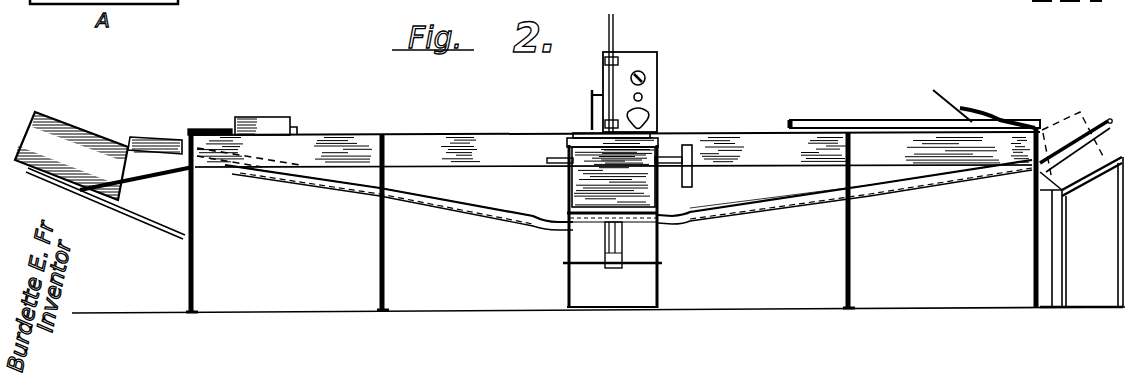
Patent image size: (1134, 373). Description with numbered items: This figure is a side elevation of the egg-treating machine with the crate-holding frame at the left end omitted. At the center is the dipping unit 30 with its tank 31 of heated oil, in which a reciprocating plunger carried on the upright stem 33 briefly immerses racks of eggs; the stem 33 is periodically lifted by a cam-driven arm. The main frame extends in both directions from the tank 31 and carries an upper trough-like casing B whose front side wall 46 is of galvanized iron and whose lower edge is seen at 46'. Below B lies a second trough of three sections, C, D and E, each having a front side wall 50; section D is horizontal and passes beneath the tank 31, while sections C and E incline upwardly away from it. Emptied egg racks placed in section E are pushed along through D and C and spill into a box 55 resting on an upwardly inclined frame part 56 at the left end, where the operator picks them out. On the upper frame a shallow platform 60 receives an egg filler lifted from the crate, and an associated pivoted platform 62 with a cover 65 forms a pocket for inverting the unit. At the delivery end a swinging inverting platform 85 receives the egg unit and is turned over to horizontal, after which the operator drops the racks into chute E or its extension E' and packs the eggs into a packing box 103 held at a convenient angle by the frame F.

The central dipping unit 30 is at (577, 106).
The tank 31 is at (613, 177).
The upright stem 33 is at (613, 26).
The front side wall 46 is at (613, 151).
The lower edge of side wall 46' is at (613, 178).
The front side wall 50 is at (517, 208).
The box 55 is at (101, 156).
The upwardly inclined frame part 56 is at (152, 228).
The platform 60 is at (206, 129).
The platform 62 is at (256, 117).
The cover 65 is at (284, 118).
The platform 85 is at (956, 103).
The packing box 103 is at (1088, 99).
The upper trough-like formation B is at (528, 131).
The trough section C is at (161, 139).
The trough section D is at (619, 220).
The trough section E is at (845, 198).
The extension E' is at (1077, 154).
The frame F is at (1112, 229).